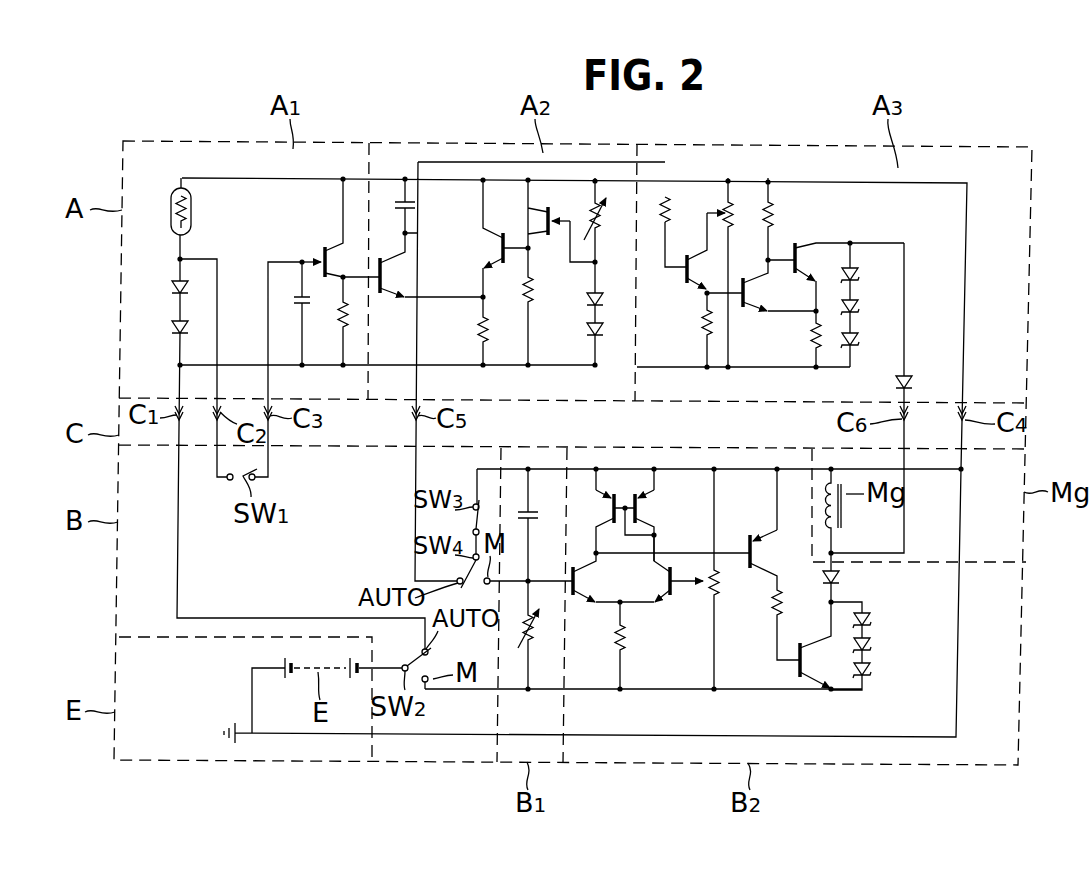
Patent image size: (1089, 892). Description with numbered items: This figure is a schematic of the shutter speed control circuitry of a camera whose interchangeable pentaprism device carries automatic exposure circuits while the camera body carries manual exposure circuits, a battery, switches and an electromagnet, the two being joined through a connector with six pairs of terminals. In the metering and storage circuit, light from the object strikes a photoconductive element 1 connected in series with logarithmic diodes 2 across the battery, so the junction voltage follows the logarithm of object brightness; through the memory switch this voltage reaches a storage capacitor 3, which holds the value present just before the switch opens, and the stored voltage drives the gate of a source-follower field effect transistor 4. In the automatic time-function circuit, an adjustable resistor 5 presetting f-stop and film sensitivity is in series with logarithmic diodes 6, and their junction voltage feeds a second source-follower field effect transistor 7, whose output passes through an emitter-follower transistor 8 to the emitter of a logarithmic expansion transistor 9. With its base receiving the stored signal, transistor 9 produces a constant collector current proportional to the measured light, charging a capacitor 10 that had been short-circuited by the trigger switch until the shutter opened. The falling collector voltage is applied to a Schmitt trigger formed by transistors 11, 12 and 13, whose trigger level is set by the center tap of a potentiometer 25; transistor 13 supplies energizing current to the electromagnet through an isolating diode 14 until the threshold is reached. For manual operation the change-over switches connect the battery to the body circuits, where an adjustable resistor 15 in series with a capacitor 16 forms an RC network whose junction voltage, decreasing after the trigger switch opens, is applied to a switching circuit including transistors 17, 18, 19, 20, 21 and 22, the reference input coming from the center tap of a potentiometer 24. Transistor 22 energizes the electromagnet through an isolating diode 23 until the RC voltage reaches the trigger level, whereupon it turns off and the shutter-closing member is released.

The photoconductive element 1 is at (191, 212).
The logarithmic diodes 2 is at (167, 323).
The storage capacitor 3 is at (296, 300).
The field effect transistor 4 is at (323, 249).
The adjustable resistor 5 is at (600, 214).
The logarithmic diodes 6 is at (606, 330).
The field effect transistor 7 is at (546, 215).
The transistor 8 is at (498, 250).
The logarithmic expansion transistor 9 is at (387, 293).
The capacitor 10 is at (398, 206).
The transistor 11 is at (692, 288).
The transistor 12 is at (751, 292).
The transistor 13 is at (803, 250).
The isolating diode 14 is at (911, 386).
The adjustable resistor 15 is at (536, 644).
The capacitor 16 is at (545, 520).
The transistor 17 is at (585, 582).
The transistor 18 is at (643, 645).
The transistor 19 is at (610, 515).
The transistor 20 is at (649, 517).
The transistor 21 is at (765, 538).
The transistor 22 is at (804, 640).
The isolating diode 23 is at (840, 581).
The potentiometer 24 is at (718, 583).
The potentiometer 25 is at (727, 213).